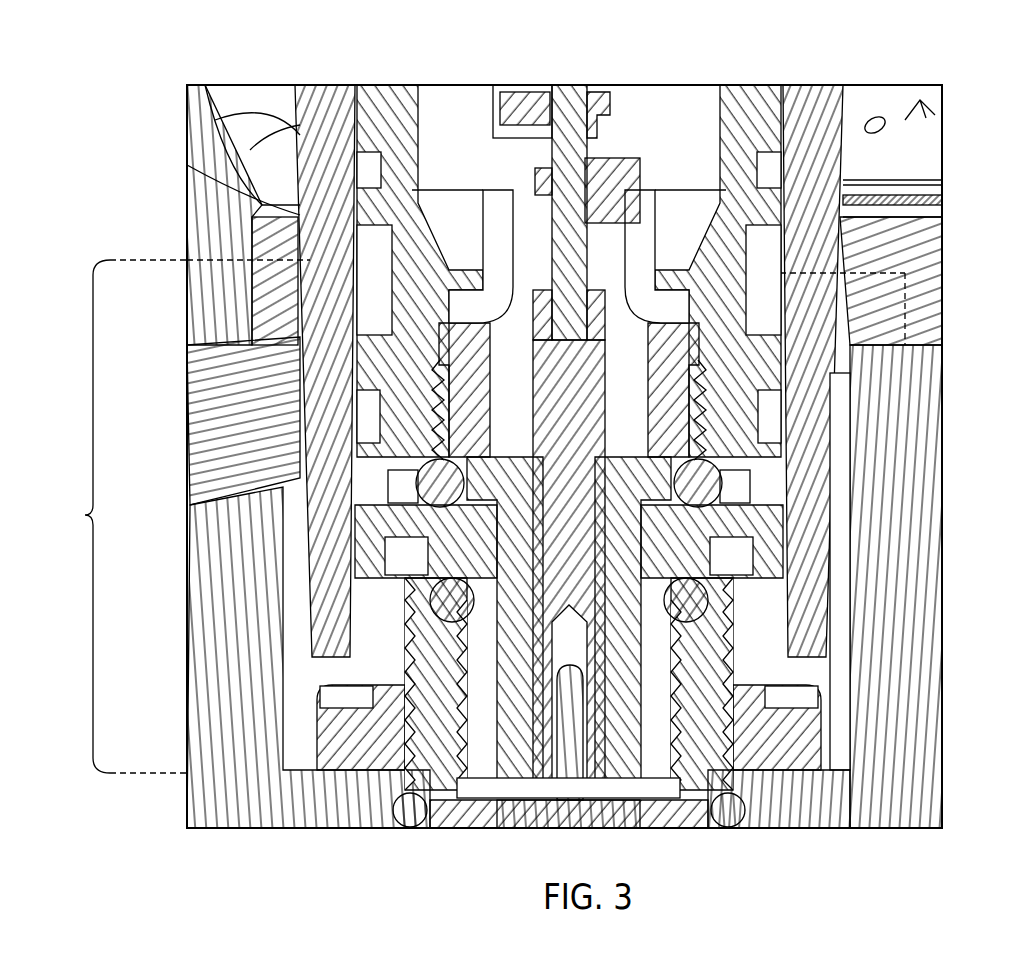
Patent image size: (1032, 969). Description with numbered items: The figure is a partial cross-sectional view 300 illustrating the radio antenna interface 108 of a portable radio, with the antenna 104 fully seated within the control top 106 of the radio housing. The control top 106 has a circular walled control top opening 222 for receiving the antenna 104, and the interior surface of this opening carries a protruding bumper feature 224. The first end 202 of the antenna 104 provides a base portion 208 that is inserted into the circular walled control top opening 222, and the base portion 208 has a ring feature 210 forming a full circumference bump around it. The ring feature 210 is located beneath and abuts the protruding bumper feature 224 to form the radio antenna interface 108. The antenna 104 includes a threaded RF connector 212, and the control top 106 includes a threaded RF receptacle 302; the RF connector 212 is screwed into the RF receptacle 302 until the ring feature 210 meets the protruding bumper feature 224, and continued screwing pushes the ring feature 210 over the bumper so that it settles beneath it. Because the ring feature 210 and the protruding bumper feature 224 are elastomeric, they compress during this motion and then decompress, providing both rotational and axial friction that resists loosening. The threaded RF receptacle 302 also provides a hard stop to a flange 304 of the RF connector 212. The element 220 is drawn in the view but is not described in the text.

The partial cross-sectional view 300 is at (178, 48).
The control top 106 is at (300, 205).
The antenna 104 is at (300, 212).
The ring feature 210 is at (290, 365).
The first end 202 is at (300, 445).
The base portion 208 is at (112, 516).
The flange 304 is at (470, 568).
The RF connector 212 is at (482, 668).
The RF receptacle 302 is at (420, 738).
The circular walled control top opening 222 is at (880, 200).
The protruding bumper feature 224 is at (832, 320).
The cover 220 is at (935, 270).
The radio antenna interface 108 is at (900, 330).